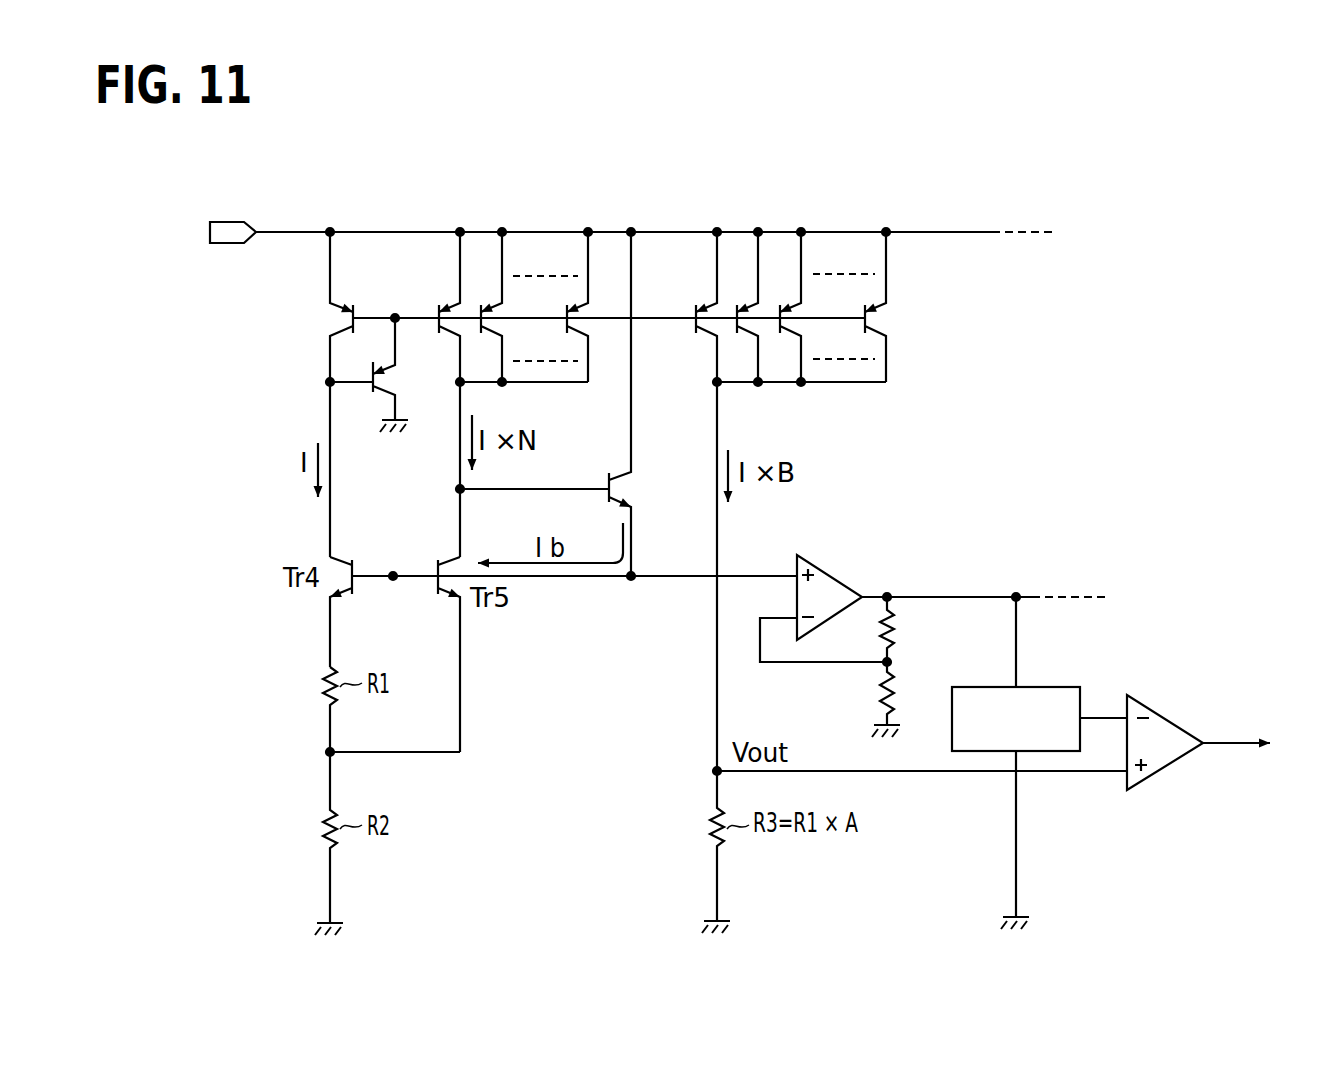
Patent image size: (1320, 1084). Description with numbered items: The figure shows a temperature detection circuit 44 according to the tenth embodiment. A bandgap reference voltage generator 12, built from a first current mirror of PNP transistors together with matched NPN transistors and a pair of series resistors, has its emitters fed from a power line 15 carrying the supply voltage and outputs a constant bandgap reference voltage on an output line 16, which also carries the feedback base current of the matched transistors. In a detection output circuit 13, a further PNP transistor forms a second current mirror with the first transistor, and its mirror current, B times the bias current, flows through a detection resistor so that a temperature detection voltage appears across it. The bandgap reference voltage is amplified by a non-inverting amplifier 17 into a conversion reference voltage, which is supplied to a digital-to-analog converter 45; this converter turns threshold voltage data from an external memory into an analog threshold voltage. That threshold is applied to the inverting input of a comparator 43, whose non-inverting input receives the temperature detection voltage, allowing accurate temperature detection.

The bandgap reference voltage (VBG) generator 12 is at (336, 212).
The detection output circuit 13 is at (727, 212).
The power line 15 is at (388, 230).
The output line 16 is at (573, 580).
The non-inverting amplifier 17 is at (840, 570).
The comparator 43 is at (1167, 718).
The temperature detection circuit 44 is at (633, 168).
The digital-to-analog (D/A) converter 45 is at (1047, 685).